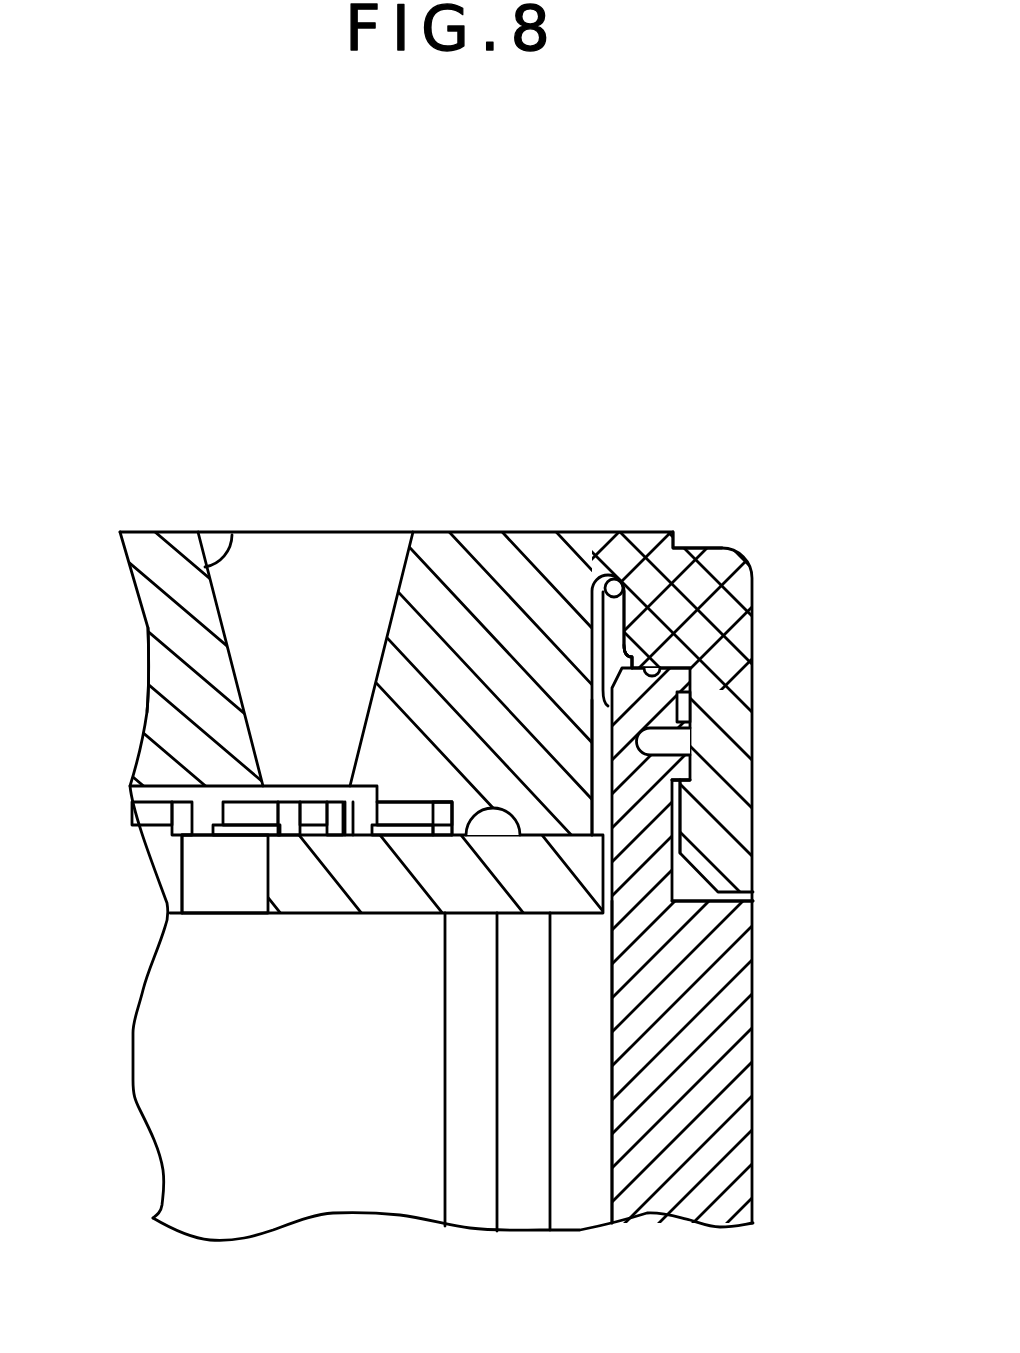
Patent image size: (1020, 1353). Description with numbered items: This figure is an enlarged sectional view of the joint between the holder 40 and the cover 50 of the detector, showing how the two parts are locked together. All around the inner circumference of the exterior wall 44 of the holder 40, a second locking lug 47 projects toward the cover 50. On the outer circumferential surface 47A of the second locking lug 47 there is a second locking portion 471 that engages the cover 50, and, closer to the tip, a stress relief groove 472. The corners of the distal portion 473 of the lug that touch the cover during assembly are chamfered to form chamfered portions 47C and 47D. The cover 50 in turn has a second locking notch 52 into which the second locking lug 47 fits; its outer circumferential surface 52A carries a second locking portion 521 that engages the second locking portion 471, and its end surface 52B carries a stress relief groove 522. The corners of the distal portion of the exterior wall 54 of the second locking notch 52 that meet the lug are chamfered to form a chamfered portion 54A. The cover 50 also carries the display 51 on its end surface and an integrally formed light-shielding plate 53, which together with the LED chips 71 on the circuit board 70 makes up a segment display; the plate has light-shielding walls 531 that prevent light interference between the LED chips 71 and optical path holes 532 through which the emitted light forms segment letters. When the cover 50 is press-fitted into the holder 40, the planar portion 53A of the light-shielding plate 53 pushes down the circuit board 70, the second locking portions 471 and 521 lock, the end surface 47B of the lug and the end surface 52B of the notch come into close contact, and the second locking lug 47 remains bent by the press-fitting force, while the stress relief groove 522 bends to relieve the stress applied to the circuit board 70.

The holder 40 is at (752, 1170).
The exterior wall 44 is at (748, 1078).
The second locking lug 47 is at (645, 853).
The outer circumferential surface 47A is at (613, 1013).
The end surface 47B is at (657, 663).
The chamfered portion 47C is at (697, 548).
The chamfered portion 47D is at (693, 653).
The second locking portion 471 is at (772, 803).
The stress relief groove 472 is at (690, 750).
The distal portion 473 is at (745, 718).
The cover 50 is at (527, 532).
The display 51 is at (441, 532).
The second locking notch 52 is at (592, 633).
The outer circumferential surface 52A is at (697, 690).
The end surface 52B is at (683, 660).
The second locking portion 521 is at (683, 782).
The stress relief groove 522 is at (612, 575).
The light-shielding plate 53 is at (150, 532).
The planar portion 53A is at (472, 810).
The light-shielding wall 531 is at (167, 662).
The optical path hole 532 is at (231, 533).
The exterior wall 54 is at (743, 863).
The chamfered portion 54A is at (700, 901).
The circuit board 70 is at (318, 913).
The LED chips 71 is at (290, 808).